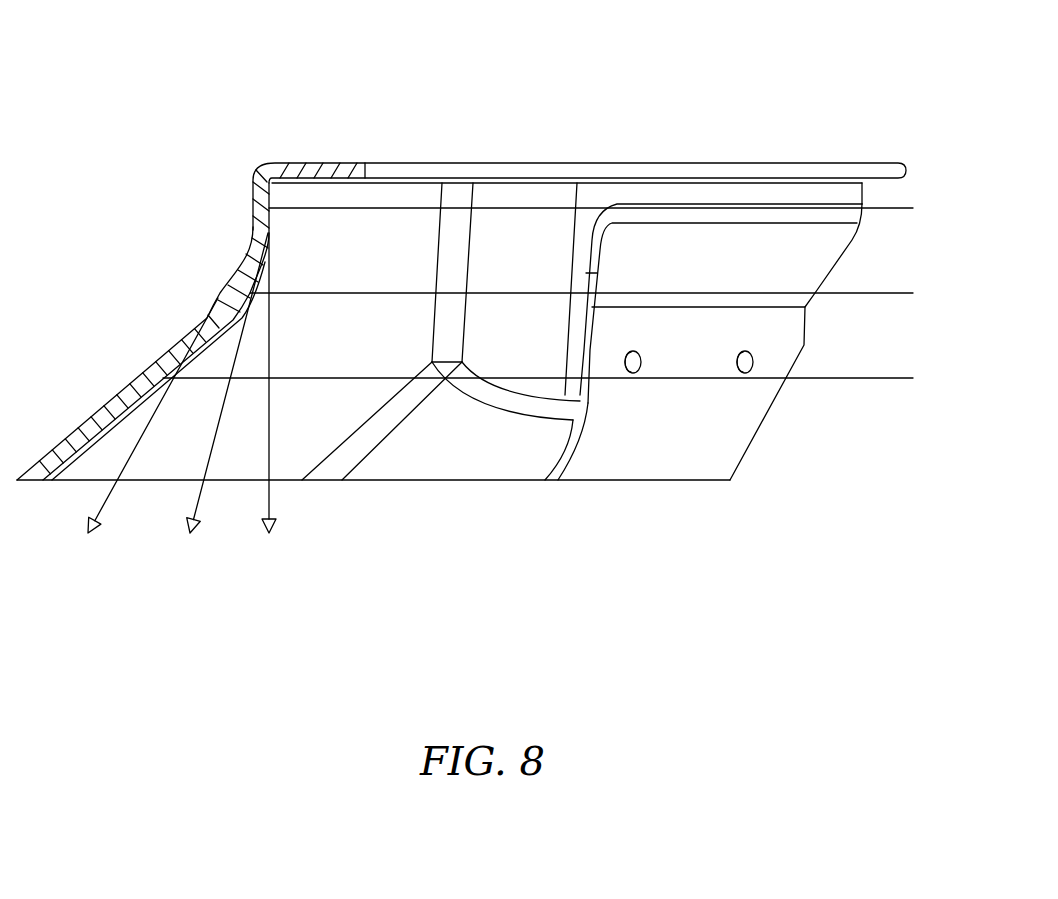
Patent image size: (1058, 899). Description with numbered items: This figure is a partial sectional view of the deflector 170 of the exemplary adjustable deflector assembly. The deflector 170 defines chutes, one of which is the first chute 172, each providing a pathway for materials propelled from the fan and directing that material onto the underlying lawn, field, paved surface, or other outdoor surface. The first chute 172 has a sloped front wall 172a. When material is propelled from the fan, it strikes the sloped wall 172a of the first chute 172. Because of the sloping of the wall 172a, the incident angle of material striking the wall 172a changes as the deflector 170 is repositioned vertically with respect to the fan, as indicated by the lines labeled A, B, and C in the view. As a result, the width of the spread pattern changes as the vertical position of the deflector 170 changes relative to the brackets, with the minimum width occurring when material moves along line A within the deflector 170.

The deflector 170 is at (475, 275).
The first chute 172 is at (397, 168).
The sloped front wall 172a is at (143, 377).